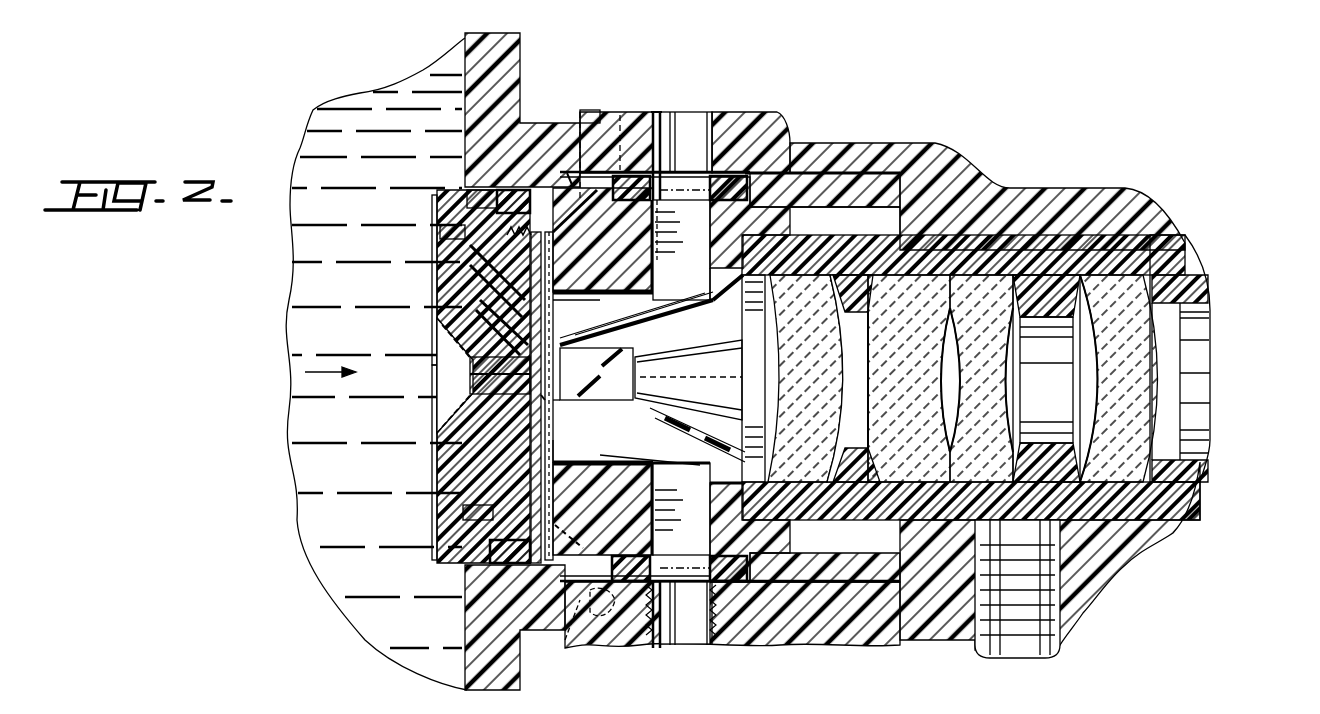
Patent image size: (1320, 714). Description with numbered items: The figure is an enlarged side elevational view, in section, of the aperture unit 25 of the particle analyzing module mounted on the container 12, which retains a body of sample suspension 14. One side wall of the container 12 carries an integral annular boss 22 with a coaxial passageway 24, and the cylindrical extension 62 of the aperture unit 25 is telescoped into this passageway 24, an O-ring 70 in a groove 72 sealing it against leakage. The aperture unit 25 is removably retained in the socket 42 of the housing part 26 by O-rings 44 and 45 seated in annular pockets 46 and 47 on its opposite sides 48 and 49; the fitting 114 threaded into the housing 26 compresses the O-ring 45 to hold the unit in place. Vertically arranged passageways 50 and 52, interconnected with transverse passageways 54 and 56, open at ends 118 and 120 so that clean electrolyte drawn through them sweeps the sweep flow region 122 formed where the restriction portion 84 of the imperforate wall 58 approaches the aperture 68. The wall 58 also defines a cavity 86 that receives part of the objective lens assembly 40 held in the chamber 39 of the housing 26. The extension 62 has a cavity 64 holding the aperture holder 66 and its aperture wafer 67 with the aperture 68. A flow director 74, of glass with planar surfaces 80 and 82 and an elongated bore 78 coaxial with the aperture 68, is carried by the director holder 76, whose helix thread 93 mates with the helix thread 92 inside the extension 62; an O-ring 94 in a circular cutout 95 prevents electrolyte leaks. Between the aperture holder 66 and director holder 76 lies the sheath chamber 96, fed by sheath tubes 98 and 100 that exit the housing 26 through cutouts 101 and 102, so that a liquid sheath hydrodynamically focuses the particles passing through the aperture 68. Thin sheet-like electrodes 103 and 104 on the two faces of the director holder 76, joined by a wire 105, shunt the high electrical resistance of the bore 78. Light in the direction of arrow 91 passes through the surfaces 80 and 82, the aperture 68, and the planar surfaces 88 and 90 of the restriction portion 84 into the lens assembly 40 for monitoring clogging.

The container 12 is at (465, 92).
The body of sample suspension 14 is at (336, 217).
The annular boss 22 is at (562, 120).
The coaxial passageway 24 is at (470, 205).
The aperture unit 25 is at (852, 170).
The housing part 26 is at (965, 180).
The chamber 39 is at (1183, 248).
The objective lens assembly 40 is at (1212, 465).
The socket 42 is at (876, 585).
The O-ring 44 is at (748, 128).
The O-ring 45 is at (740, 590).
The annular pocket 46 is at (688, 130).
The annular pocket 47 is at (670, 600).
The side 48 is at (800, 157).
The side 49 is at (808, 585).
The vertically arranged passageway 50 is at (714, 302).
The vertically arranged passageway 52 is at (712, 502).
The transverse passageway 54 is at (612, 350).
The transverse passageway 56 is at (645, 445).
The imperforate wall 58 is at (716, 313).
The cylindrical extension 62 is at (472, 556).
The cavity 64 is at (545, 530).
The aperture holder 66 is at (560, 290).
The aperture wafer 67 is at (571, 452).
The aperture 68 is at (650, 436).
The O-ring 70 is at (512, 190).
The groove 72 is at (567, 178).
The flow director 74 is at (520, 348).
The director holder 76 is at (447, 341).
The elongated bore 78 is at (442, 403).
The planar surface 80 is at (445, 392).
The planar surface 82 is at (560, 397).
The restriction portion 84 is at (553, 354).
The cavity 86 is at (732, 440).
The planar surface 88 is at (572, 419).
The planar surface 90 is at (640, 377).
The arrow 91 is at (324, 370).
The helix thread 92 is at (495, 281).
The helix thread 93 is at (520, 242).
The O-ring 94 is at (478, 213).
The circular cutout 95 is at (440, 262).
The sheath chamber 96 is at (546, 405).
The sheath tube 98 is at (603, 118).
The sheath tube 100 is at (565, 605).
The cutout 101 is at (655, 110).
The cutout 102 is at (602, 615).
The sheet-like electrode 103 is at (549, 262).
The sheet-like electrode 104 is at (437, 280).
The wire 105 is at (440, 459).
The fitting 114 is at (648, 608).
The end 118 is at (664, 215).
The end 120 is at (650, 508).
The sweep flow region 122 is at (596, 374).